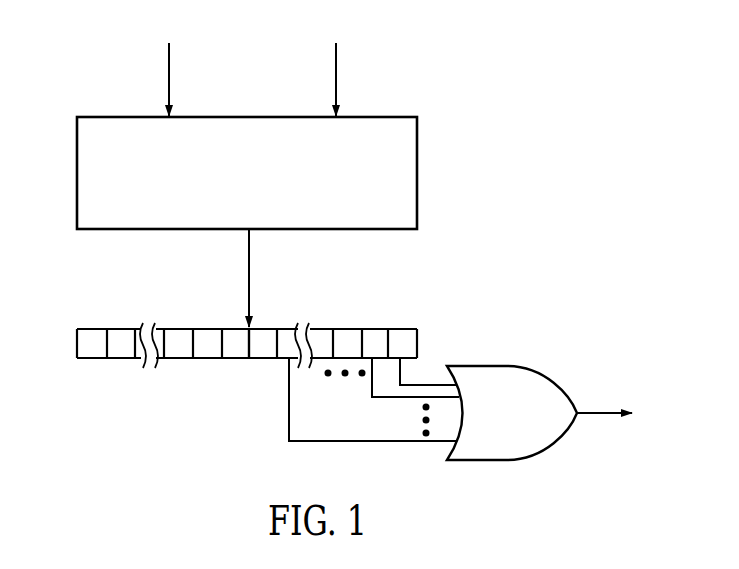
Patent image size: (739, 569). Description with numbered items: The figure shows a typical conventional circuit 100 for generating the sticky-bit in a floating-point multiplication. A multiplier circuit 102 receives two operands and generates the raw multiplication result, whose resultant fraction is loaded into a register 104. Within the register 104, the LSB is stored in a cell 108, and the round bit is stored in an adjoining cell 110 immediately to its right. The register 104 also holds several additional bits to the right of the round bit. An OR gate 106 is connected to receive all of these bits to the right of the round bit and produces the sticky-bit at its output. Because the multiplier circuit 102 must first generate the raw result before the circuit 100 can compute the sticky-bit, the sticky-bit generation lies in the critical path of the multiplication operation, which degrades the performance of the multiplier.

The conventional circuit 100 is at (586, 284).
The multiplier circuit 102 is at (417, 137).
The register 104 is at (256, 343).
The OR gate 106 is at (523, 425).
The cell 108 is at (227, 359).
The adjoining cell 110 is at (263, 359).